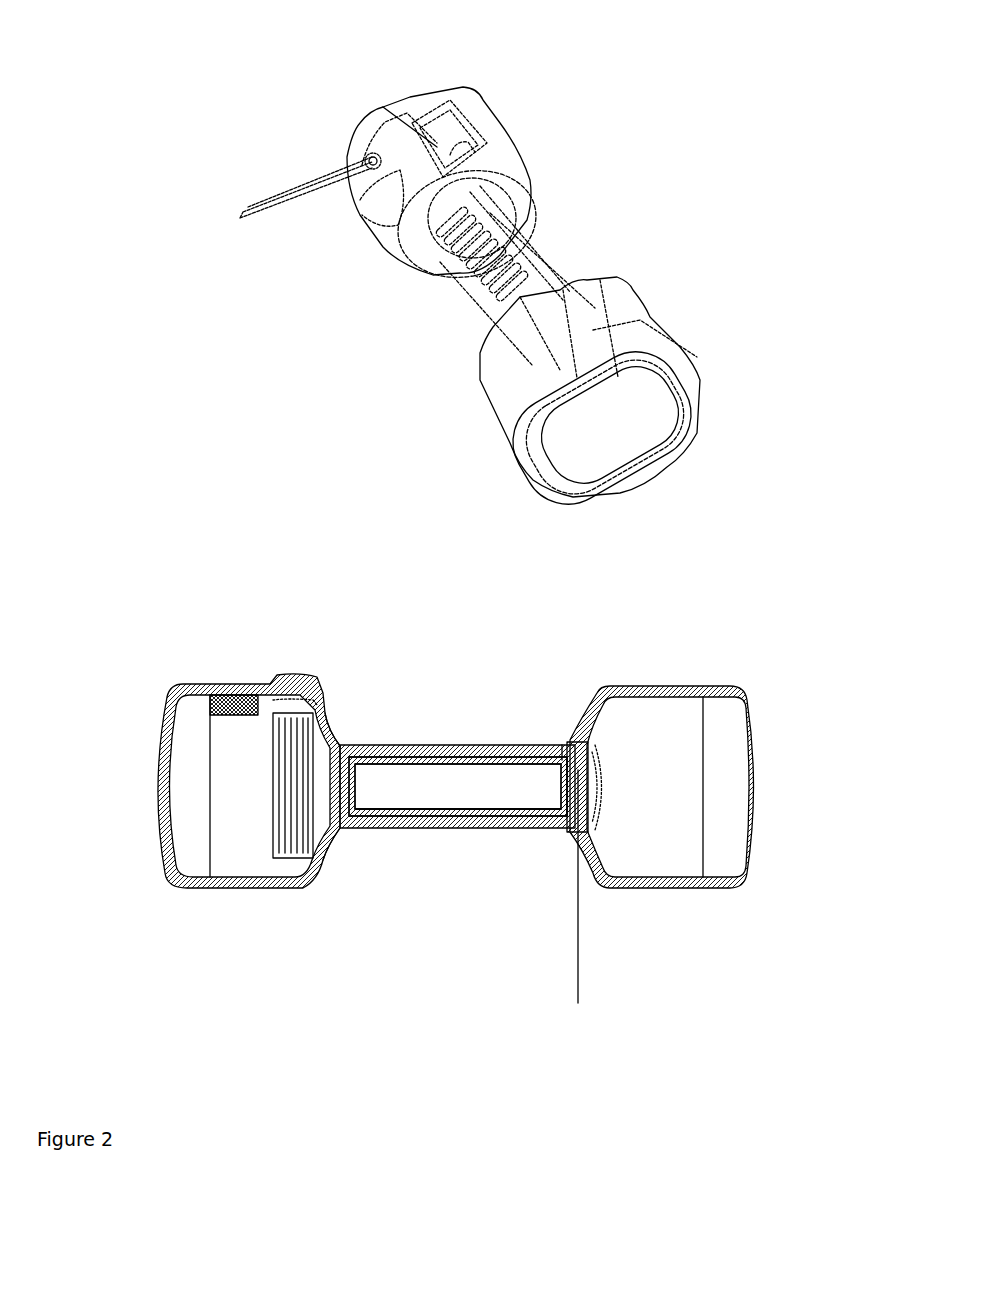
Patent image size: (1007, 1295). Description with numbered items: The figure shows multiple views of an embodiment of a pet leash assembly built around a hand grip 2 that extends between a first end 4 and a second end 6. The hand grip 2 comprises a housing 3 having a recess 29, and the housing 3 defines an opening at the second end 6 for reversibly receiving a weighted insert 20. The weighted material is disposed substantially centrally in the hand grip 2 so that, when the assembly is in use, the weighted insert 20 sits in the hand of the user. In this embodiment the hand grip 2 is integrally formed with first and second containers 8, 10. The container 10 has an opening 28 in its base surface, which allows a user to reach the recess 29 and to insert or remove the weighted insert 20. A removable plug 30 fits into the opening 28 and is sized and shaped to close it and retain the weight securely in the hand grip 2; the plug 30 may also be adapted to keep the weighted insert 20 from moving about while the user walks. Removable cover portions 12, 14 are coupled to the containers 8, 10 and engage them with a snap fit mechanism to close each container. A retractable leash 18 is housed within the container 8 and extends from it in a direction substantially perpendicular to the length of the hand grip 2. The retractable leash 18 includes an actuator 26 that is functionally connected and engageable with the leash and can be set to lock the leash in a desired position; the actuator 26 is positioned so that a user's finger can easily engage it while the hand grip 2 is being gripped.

The hand grip 2 is at (440, 830).
The housing 3 is at (488, 790).
The first end 4 is at (350, 878).
The second end 6 is at (575, 810).
The first container 8 is at (508, 122).
The second container 10 is at (632, 303).
The removable cover portion 12 is at (180, 948).
The removable cover portion 14 is at (678, 353).
The retractable leash 18 is at (312, 186).
The weighted insert 20 is at (400, 790).
The actuator 26 is at (455, 130).
The opening 28 is at (562, 745).
The recess 29 is at (528, 815).
The removable plug 30 is at (580, 909).